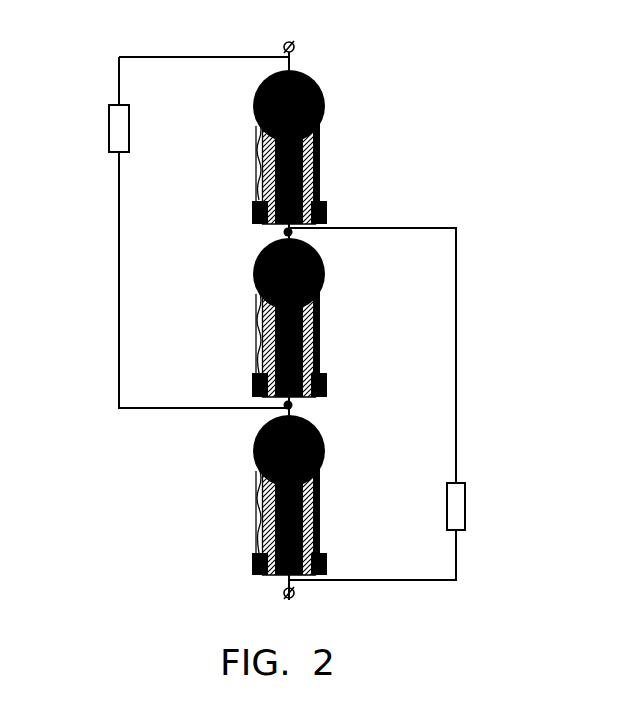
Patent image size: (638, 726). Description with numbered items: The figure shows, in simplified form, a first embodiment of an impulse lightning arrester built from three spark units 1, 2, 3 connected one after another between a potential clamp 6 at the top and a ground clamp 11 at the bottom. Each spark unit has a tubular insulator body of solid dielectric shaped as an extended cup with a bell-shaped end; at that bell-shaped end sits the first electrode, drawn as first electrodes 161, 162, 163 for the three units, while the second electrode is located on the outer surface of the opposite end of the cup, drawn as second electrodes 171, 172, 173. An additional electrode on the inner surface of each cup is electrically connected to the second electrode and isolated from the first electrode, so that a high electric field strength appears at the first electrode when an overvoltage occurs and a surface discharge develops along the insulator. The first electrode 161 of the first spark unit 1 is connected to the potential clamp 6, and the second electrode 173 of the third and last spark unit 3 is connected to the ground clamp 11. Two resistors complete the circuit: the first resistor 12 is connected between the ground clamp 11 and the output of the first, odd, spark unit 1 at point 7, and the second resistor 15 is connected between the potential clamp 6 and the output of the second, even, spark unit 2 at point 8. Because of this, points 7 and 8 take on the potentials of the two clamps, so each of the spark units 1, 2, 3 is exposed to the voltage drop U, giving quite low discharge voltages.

The first spark unit 1 is at (294, 140).
The second spark unit 2 is at (293, 321).
The third spark unit 3 is at (298, 498).
The potential clamp 6 is at (285, 44).
The point 7 is at (285, 233).
The point 8 is at (285, 404).
The ground clamp 11 is at (293, 596).
The first resistor 12 is at (465, 496).
The second resistor 15 is at (109, 120).
The first electrode 161 is at (320, 88).
The first electrode 162 is at (322, 262).
The first electrode 163 is at (324, 440).
The second electrode 171 is at (327, 212).
The second electrode 172 is at (327, 384).
The second electrode 173 is at (327, 556).